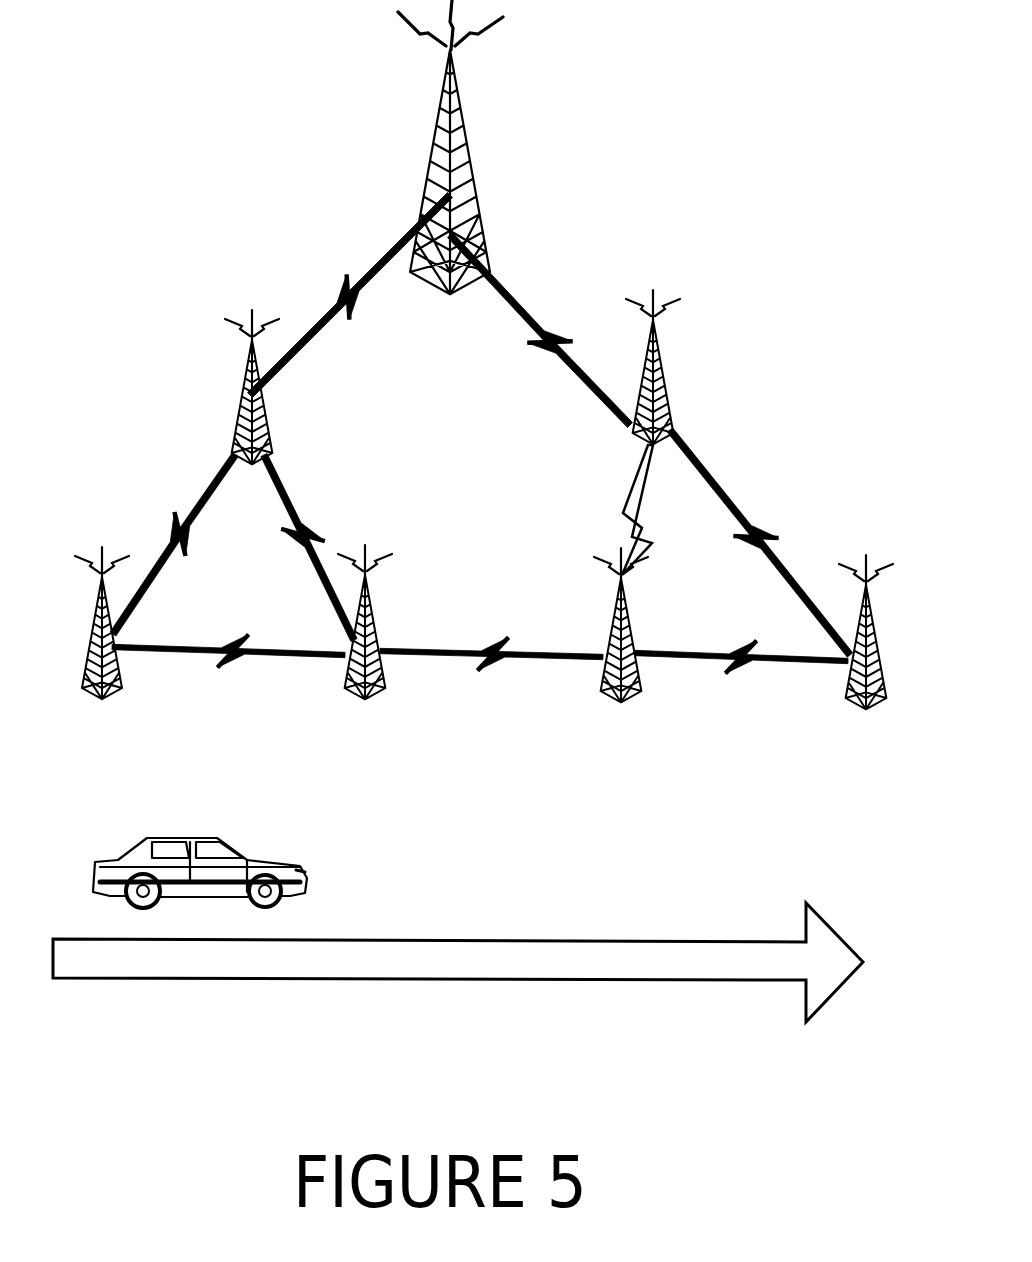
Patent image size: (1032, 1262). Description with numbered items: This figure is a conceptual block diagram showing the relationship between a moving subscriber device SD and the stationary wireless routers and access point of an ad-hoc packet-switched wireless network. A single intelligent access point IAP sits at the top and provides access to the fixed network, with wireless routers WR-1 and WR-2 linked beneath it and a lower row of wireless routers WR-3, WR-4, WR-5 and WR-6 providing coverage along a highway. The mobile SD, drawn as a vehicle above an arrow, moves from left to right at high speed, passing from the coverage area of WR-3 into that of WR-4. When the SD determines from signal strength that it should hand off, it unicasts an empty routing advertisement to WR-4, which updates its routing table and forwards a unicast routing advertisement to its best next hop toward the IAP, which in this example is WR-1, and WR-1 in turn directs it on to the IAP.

The intelligent access point IAP is at (450, 177).
The wireless router WR-1 is at (298, 387).
The wireless router WR-2 is at (701, 367).
The wireless router WR-3 is at (99, 652).
The wireless router WR-4 is at (360, 651).
The wireless router WR-5 is at (624, 654).
The wireless router WR-6 is at (869, 660).
The subscriber device SD is at (458, 930).